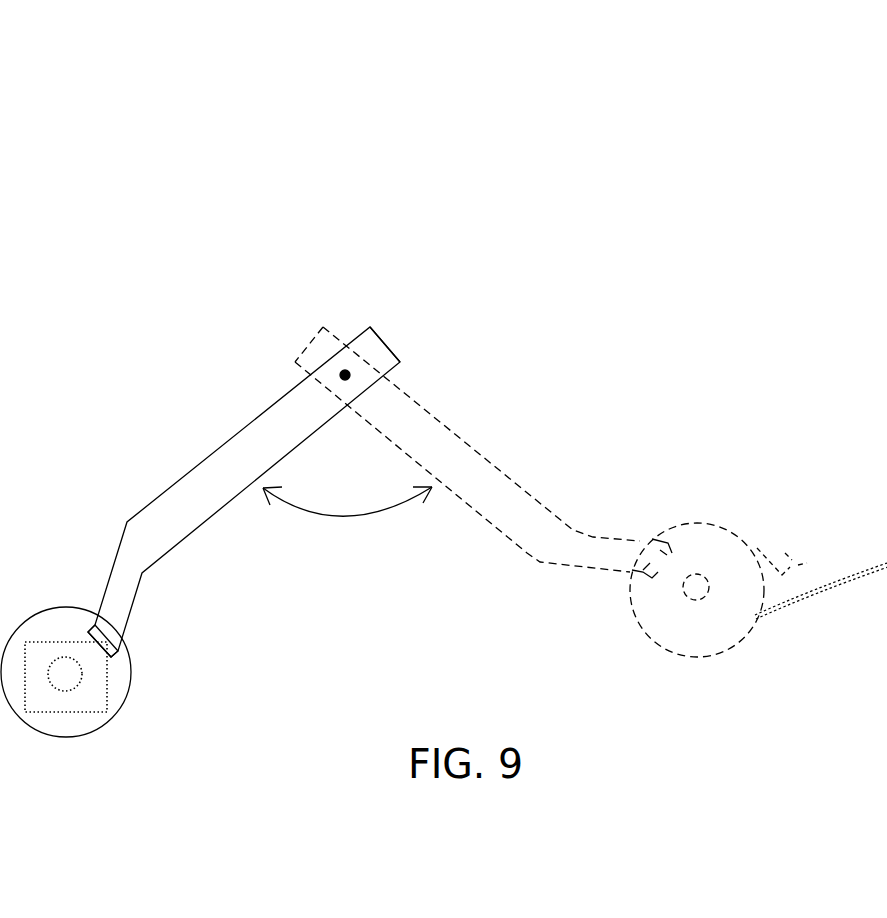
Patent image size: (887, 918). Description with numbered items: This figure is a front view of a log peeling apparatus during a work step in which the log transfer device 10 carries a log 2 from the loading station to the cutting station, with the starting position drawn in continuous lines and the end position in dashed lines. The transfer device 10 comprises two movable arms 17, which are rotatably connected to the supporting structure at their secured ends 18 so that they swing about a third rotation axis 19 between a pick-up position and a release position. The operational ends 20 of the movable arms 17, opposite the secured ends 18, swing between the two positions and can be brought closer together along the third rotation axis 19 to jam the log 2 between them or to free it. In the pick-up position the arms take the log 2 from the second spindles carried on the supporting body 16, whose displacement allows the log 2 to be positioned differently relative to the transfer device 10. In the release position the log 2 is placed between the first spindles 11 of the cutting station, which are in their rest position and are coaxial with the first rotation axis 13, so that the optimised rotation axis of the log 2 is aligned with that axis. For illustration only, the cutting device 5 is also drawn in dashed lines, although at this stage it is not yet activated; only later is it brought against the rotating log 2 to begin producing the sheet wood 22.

The log 2 is at (80, 748).
The cutting device 5 is at (518, 217).
The log transfer device 10 is at (338, 202).
The first spindles 11 is at (697, 598).
The first rotation axis 13 is at (782, 575).
The supporting body 16 is at (82, 690).
The movable arms 17 is at (235, 437).
The secured ends 18 is at (300, 337).
The third rotation axis 19 is at (352, 376).
The operational ends 20 is at (139, 652).
The sheet wood 22 is at (838, 567).